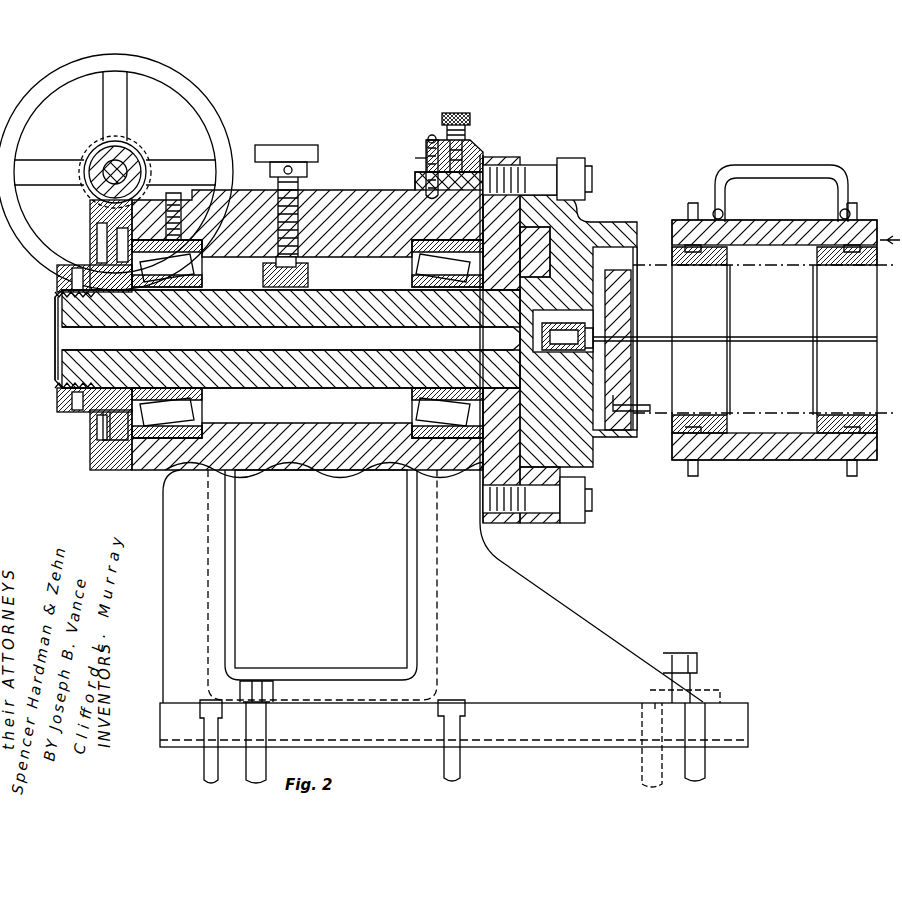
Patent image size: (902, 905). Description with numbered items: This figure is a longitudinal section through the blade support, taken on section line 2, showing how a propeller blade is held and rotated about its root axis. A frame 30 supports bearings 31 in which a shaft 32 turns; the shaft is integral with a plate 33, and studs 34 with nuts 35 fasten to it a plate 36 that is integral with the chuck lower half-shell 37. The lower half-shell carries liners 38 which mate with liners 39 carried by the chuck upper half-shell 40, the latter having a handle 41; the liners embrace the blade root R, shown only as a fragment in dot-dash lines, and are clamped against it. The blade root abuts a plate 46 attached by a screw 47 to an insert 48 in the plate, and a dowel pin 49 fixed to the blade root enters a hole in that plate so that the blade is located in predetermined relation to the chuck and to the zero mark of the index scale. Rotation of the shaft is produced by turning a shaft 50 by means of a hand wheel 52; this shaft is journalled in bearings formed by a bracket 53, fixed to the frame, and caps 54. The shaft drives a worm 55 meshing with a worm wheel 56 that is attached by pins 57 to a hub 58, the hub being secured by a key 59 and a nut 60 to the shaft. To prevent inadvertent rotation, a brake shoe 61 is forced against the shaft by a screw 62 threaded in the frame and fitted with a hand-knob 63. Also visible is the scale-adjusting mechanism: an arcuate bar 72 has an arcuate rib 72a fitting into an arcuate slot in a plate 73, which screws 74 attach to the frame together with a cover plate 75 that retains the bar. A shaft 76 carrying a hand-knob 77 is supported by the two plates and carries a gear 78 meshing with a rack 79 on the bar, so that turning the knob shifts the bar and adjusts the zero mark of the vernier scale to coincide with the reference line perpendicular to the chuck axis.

The section line 2 is at (40, 339).
The frame 30 is at (577, 628).
The bearings 31 is at (205, 268).
The shaft 32 is at (326, 388).
The plate 33 is at (500, 527).
The studs 34 is at (594, 500).
The nuts 35 is at (578, 523).
The plate 36 is at (548, 525).
The chuck lower half-shell 37 is at (738, 462).
The liners 38 is at (783, 377).
The liners 39 is at (812, 300).
The chuck upper half-shell 40 is at (672, 215).
The handle 41 is at (720, 160).
The plate 46 is at (632, 298).
The screw 47 is at (592, 350).
The insert 48 is at (585, 313).
The dowel pin 49 is at (650, 392).
The shaft 50 is at (99, 180).
The hand wheel 52 is at (208, 86).
The bracket 53 is at (150, 200).
The caps 54 is at (138, 138).
The worm 55 is at (98, 148).
The worm wheel 56 is at (91, 222).
The pins 57 is at (110, 425).
The hub 58 is at (86, 412).
The key 59 is at (62, 296).
The nut 60 is at (57, 276).
The brake shoe 61 is at (310, 270).
The screw 62 is at (305, 200).
The hand-knob 63 is at (320, 145).
The arcuate bar 72 is at (484, 150).
The arcuate rib 72a is at (484, 160).
The plate 73 is at (418, 160).
The screws 74 is at (430, 136).
The cover plate 75 is at (424, 145).
The shaft 76 is at (452, 178).
The hand-knob 77 is at (465, 106).
The gear 78 is at (460, 150).
The rack 79 is at (520, 140).
The blade root R is at (655, 265).